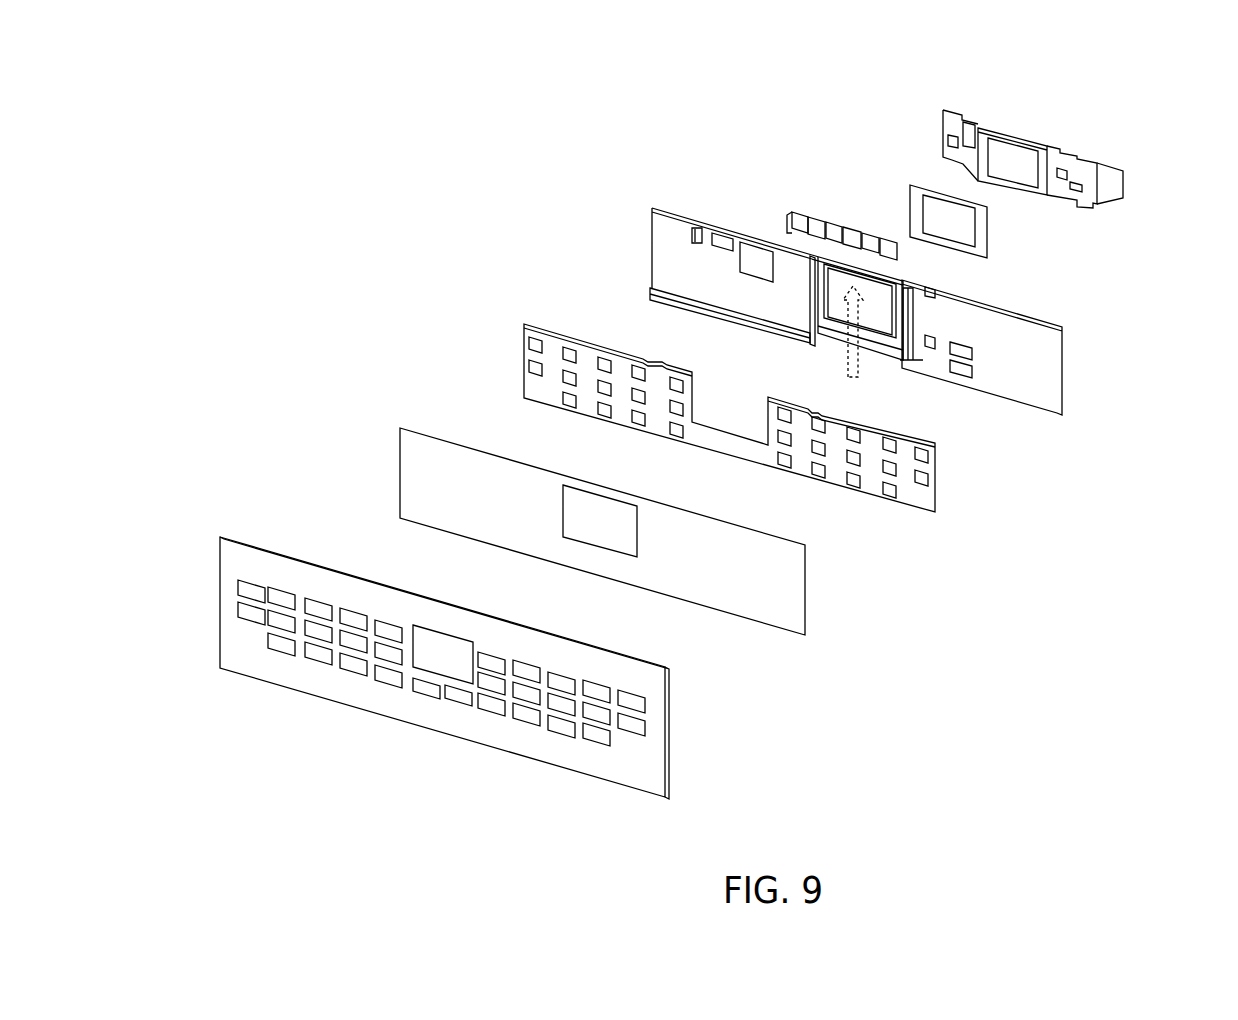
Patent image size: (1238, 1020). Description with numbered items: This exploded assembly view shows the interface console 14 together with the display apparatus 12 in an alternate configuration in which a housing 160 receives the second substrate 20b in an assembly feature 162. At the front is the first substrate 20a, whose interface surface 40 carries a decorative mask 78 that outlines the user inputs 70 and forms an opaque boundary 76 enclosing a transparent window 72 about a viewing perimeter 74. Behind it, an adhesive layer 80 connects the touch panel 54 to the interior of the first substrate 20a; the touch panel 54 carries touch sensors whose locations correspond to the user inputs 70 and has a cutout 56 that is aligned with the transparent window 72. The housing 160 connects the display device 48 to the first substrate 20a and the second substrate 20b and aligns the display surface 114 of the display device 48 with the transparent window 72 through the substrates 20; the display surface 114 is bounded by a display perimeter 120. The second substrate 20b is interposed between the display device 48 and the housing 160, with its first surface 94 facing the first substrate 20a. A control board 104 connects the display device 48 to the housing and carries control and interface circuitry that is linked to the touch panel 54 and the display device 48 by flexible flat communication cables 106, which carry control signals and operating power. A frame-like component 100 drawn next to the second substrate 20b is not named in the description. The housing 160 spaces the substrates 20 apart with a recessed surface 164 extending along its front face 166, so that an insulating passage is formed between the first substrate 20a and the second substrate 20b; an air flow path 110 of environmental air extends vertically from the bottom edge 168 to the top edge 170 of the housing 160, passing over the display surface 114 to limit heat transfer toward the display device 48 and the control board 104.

The display apparatus 12 is at (1064, 292).
The interface console 14 is at (461, 179).
The substrates 20 is at (500, 655).
The first substrate 20a is at (500, 655).
The second substrate 20b is at (945, 168).
The interface surface 40 is at (417, 655).
The display device 48 is at (1023, 162).
The touch panel 54 is at (937, 490).
The cutout 56 is at (596, 512).
The user inputs 70 is at (530, 730).
The transparent window 72 is at (374, 640).
The viewing perimeter 74 is at (374, 640).
The opaque boundary 76 is at (427, 648).
The decorative mask 78 is at (436, 655).
The adhesive layer 80 is at (662, 472).
The first surface 94 is at (983, 215).
The display bezel 100 is at (962, 193).
The control board 104 is at (1077, 157).
The communication cables 106 is at (838, 228).
The air flow path 110 is at (836, 353).
The display surface 114 is at (1017, 229).
The display perimeter 120 is at (1049, 123).
The housing 160 is at (1031, 362).
The assembly feature 162 is at (884, 295).
The recessed surface 164 is at (872, 348).
The front face 166 is at (680, 276).
The bottom edge 168 is at (872, 356).
The top edge 170 is at (807, 278).